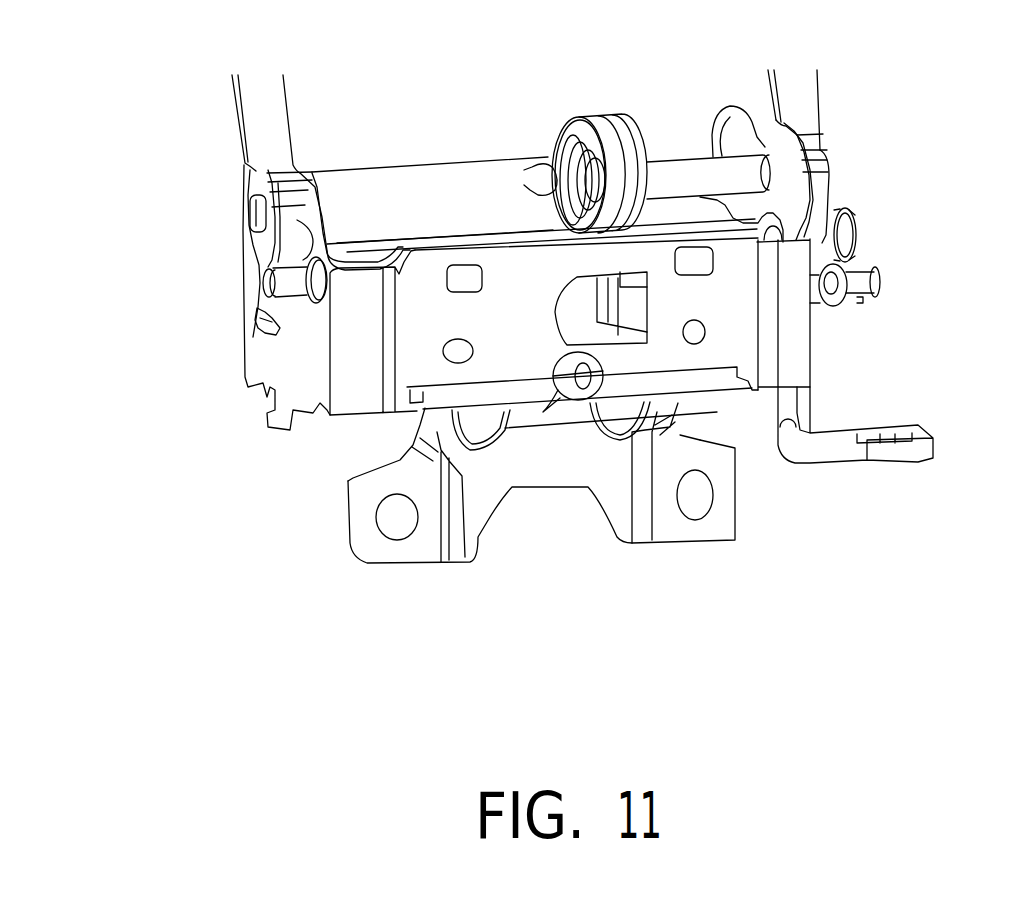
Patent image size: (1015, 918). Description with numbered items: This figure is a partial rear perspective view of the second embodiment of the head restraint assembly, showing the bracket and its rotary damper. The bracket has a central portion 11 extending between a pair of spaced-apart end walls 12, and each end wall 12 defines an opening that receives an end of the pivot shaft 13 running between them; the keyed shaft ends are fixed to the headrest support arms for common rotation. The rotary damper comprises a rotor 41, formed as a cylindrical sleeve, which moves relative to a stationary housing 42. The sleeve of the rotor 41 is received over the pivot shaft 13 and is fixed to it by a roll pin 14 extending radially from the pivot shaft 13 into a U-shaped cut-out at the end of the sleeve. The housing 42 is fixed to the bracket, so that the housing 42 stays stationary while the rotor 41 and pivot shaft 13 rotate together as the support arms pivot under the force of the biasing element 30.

The central portion 11 is at (513, 338).
The end wall 12 is at (818, 335).
The pivot shaft 13 is at (723, 176).
The roll pin 14 is at (545, 178).
The biasing element 30 is at (432, 176).
The rotor 41 is at (551, 212).
The stationary housing 42 is at (612, 120).